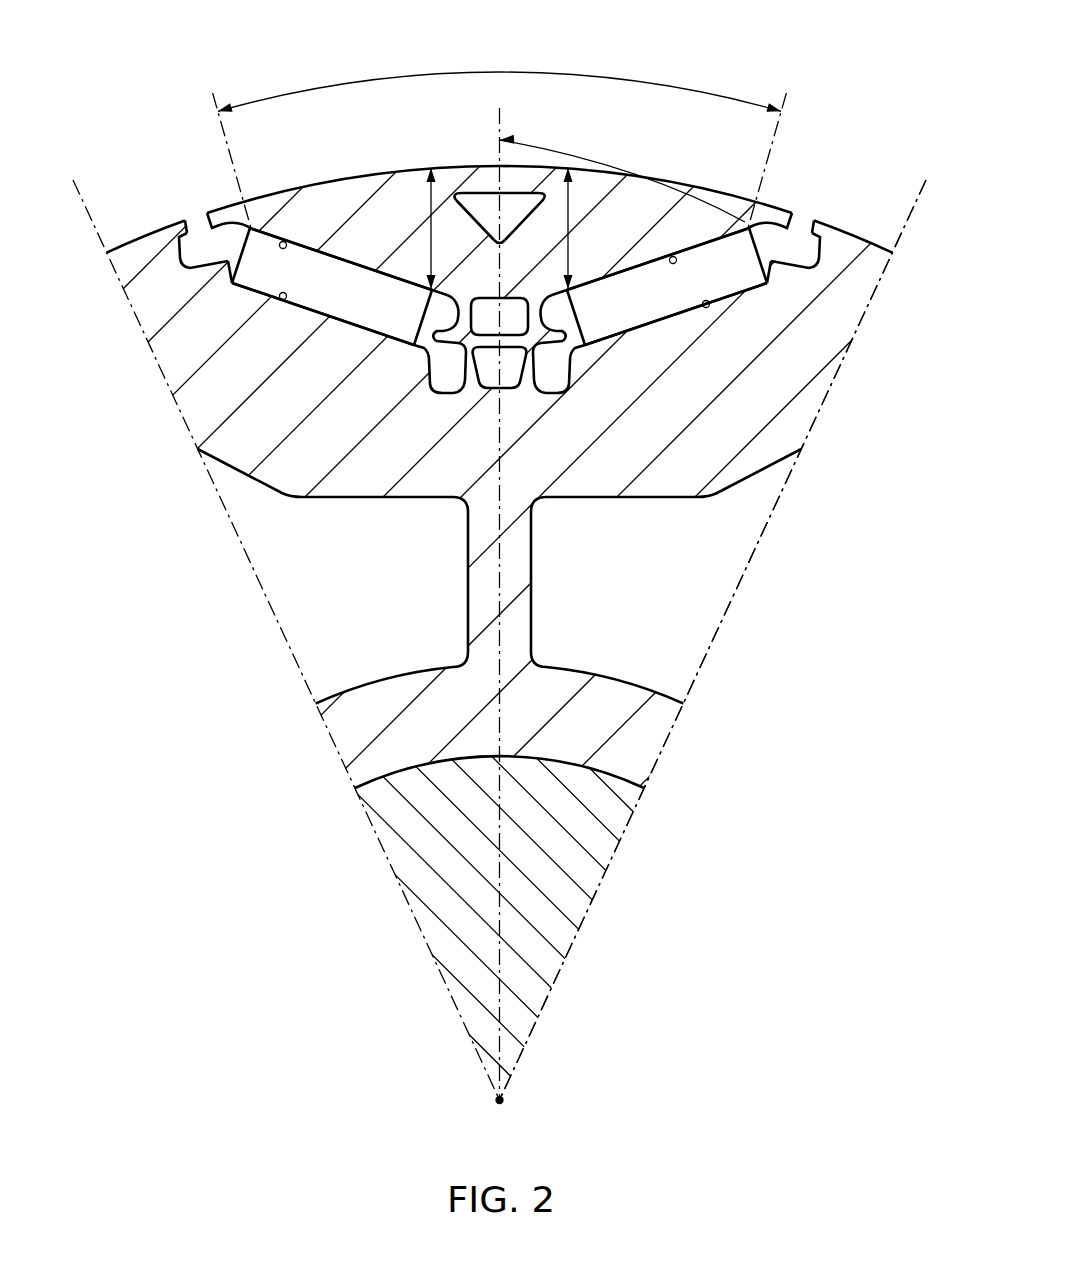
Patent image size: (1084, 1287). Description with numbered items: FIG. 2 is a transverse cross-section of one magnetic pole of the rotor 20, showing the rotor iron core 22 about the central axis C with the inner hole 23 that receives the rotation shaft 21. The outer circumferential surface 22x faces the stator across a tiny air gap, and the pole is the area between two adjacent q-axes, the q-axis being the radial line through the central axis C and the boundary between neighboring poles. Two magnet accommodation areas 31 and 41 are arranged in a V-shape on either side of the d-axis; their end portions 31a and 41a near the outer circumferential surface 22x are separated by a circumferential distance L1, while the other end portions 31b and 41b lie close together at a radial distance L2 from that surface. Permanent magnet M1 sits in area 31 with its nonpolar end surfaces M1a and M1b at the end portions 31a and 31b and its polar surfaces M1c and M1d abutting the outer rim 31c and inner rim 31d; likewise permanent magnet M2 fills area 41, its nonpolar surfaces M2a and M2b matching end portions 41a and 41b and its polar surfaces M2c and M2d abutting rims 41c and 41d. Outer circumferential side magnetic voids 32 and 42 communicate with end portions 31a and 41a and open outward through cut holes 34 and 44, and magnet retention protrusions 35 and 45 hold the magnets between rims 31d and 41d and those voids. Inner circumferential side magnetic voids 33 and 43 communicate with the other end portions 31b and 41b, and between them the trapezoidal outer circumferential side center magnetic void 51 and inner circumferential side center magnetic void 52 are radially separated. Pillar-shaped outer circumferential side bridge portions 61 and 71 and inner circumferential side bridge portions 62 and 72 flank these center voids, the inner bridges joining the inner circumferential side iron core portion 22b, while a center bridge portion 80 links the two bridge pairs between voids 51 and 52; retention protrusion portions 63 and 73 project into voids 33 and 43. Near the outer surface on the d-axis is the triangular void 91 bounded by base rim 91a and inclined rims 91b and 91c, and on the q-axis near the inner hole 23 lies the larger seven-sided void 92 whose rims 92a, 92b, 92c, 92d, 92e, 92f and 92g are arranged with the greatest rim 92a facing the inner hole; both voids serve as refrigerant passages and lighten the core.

The rotor 20 is at (322, 727).
The rotation shaft 21 is at (450, 680).
The rotor iron core 22 is at (195, 398).
The outer circumferential surface 22x is at (407, 167).
The inner circumferential side iron core portion 22b is at (775, 407).
The inner hole 23 is at (400, 772).
The first magnet accommodation area 31 is at (275, 236).
The end portion of first magnet accommodation area 31a is at (233, 286).
The other end portion of first magnet accommodation area 31b is at (397, 357).
The outer circumferential side rim of first magnet accommodation area 31c is at (353, 259).
The inner circumferential side rim of first magnet accommodation area 31d is at (343, 326).
The first outer circumferential side magnetic void 32 is at (184, 254).
The first inner circumferential side magnetic void 33 is at (443, 348).
The cut hole 34 is at (185, 222).
The magnet retention protrusion 35 is at (227, 265).
The second magnet accommodation area 41 is at (722, 236).
The end portion of second magnet accommodation area 41a is at (759, 288).
The other end portion of second magnet accommodation area 41b is at (600, 357).
The outer circumferential side rim of second magnet accommodation area 41c is at (585, 282).
The inner circumferential side rim of second magnet accommodation area 41d is at (654, 325).
The second outer circumferential side magnetic void 42 is at (811, 258).
The second inner circumferential side magnetic void 43 is at (558, 334).
The cut hole 44 is at (815, 221).
The magnet retention protrusion 45 is at (777, 270).
The outer circumferential side center magnetic void 51 is at (511, 298).
The inner circumferential side center magnetic void 52 is at (505, 390).
The first outer circumferential side bridge portion 61 is at (476, 300).
The first inner circumferential side bridge portion 62 is at (478, 390).
The first protrusion portion 63 is at (447, 367).
The second outer circumferential side bridge portion 71 is at (526, 300).
The second inner circumferential side bridge portion 72 is at (533, 388).
The second protrusion portion 73 is at (551, 367).
The center bridge portion 80 is at (510, 293).
The void 91 is at (496, 182).
The rim of void 91 91a is at (461, 195).
The rim of void 91 91b is at (475, 215).
The rim of void 91 91c is at (525, 215).
The void 92 is at (284, 574).
The rim of void 92 92a is at (390, 676).
The rim of void 92 92b is at (533, 577).
The rim of void 92 92c is at (634, 500).
The rim of void 92 92d is at (740, 482).
The rim of void 92 92e is at (260, 483).
The rim of void 92 92f is at (367, 500).
The rim of void 92 92g is at (466, 572).
The permanent magnet M1 is at (377, 203).
The nonpolar surface of permanent magnet M1 M1a is at (242, 226).
The nonpolar surface of permanent magnet M1 M1b is at (423, 351).
The polar surface of permanent magnet M1 M1c is at (284, 242).
The polar surface of permanent magnet M1 M1d is at (282, 300).
The permanent magnet M2 is at (600, 204).
The nonpolar surface of permanent magnet M2 M2a is at (758, 255).
The nonpolar surface of permanent magnet M2 M2b is at (577, 351).
The polar surface of permanent magnet M2 M2c is at (671, 256).
The polar surface of permanent magnet M2 M2d is at (708, 308).
The central axis C is at (503, 1103).
The q-axis q is at (85, 184).
The predetermined distance L1 is at (459, 72).
The predetermined distance L2 is at (428, 207).